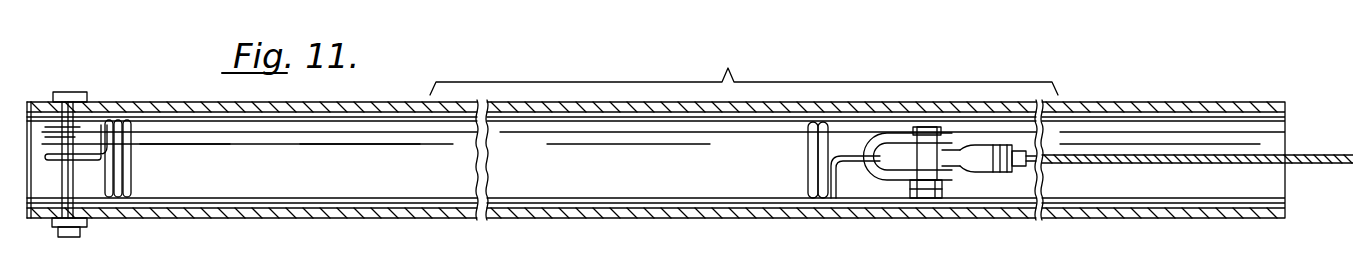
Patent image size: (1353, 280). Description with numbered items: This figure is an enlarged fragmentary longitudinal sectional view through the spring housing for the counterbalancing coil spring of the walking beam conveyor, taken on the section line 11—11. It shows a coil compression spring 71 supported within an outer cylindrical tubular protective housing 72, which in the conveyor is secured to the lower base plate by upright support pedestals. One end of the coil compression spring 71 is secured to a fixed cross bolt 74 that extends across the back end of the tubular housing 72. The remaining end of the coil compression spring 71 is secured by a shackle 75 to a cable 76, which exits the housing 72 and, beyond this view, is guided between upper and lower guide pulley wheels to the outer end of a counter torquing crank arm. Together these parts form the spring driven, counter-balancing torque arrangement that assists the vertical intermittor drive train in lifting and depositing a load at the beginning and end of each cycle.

The tubular housing 11 is at (290, 279).
The coil compression spring 71 is at (808, 160).
The tubular protective housing 72 is at (505, 218).
The fixed cross bolt 74 is at (75, 82).
The shackle 75 is at (880, 178).
The cable 76 is at (1095, 163).